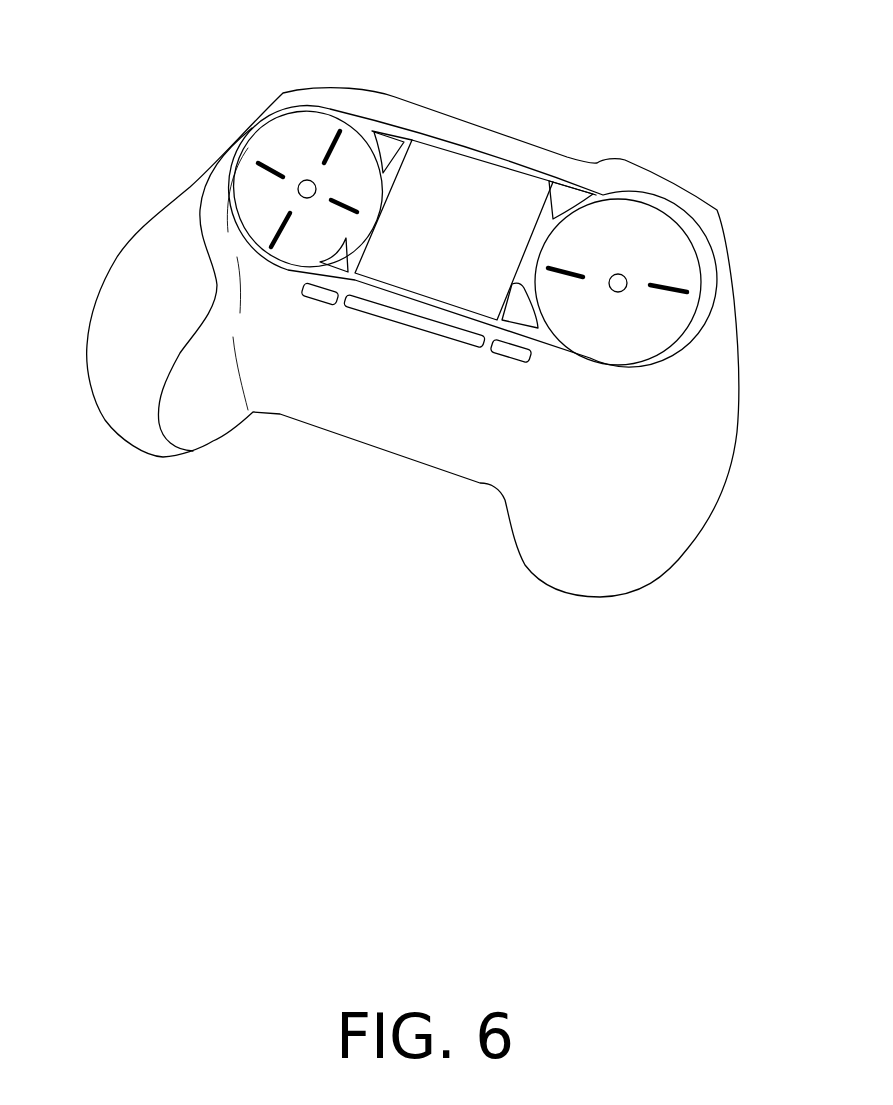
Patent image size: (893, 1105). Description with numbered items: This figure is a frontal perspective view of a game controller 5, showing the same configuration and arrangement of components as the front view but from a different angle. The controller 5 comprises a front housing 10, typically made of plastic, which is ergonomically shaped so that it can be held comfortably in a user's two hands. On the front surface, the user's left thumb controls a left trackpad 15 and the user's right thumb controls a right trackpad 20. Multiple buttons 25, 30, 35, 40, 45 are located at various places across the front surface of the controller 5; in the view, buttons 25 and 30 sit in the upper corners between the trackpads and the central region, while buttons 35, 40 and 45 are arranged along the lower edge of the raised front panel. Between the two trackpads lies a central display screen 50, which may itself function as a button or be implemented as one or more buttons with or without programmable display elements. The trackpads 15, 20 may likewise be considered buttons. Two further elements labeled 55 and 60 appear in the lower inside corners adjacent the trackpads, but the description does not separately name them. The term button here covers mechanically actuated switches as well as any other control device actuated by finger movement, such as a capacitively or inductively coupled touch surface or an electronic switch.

The game controller 5 is at (418, 304).
The front housing 10 is at (116, 256).
The left trackpad 15 is at (300, 143).
The right trackpad 20 is at (634, 228).
The button 25 is at (386, 132).
The button 30 is at (566, 193).
The button 35 is at (327, 300).
The button 40 is at (513, 360).
The button 45 is at (403, 313).
The central display screen 50 is at (475, 175).
The lower left corner button 55 is at (345, 247).
The lower right corner button 60 is at (522, 317).